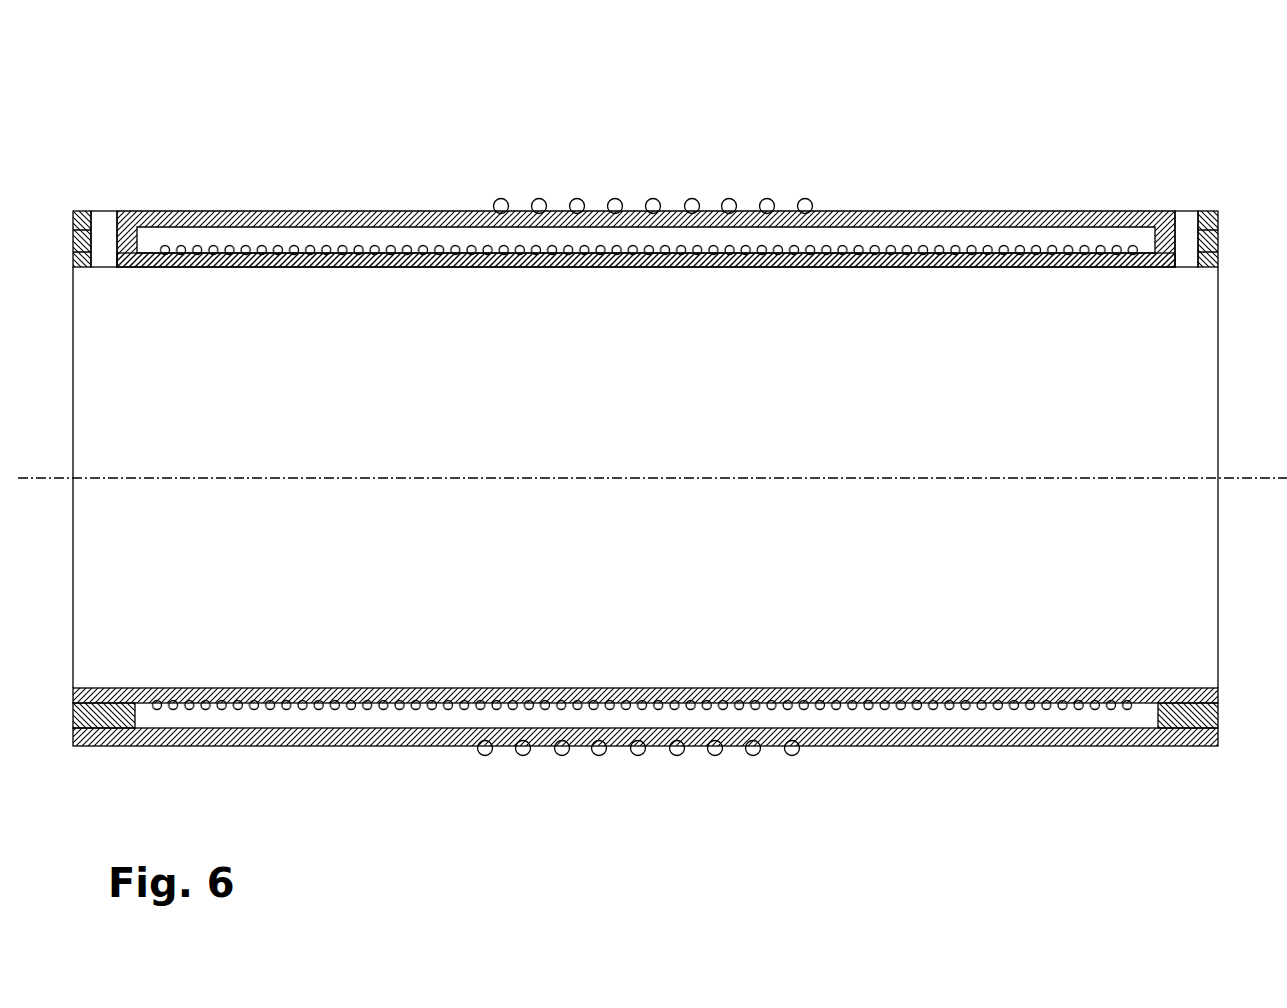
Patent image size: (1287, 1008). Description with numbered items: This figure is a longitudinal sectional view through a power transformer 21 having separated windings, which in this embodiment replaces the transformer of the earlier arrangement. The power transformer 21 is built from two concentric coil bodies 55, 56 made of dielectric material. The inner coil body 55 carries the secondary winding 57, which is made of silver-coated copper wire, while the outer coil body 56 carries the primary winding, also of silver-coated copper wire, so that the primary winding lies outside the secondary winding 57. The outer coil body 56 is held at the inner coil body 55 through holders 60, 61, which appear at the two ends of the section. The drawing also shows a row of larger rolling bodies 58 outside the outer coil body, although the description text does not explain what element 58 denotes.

The power transformer 21 is at (352, 121).
The coil body 55 is at (915, 267).
The coil body 56 is at (897, 210).
The secondary winding 57 is at (1027, 266).
The outer rolling elements 58 is at (753, 203).
The holder 60 is at (1187, 220).
The holder 61 is at (105, 220).